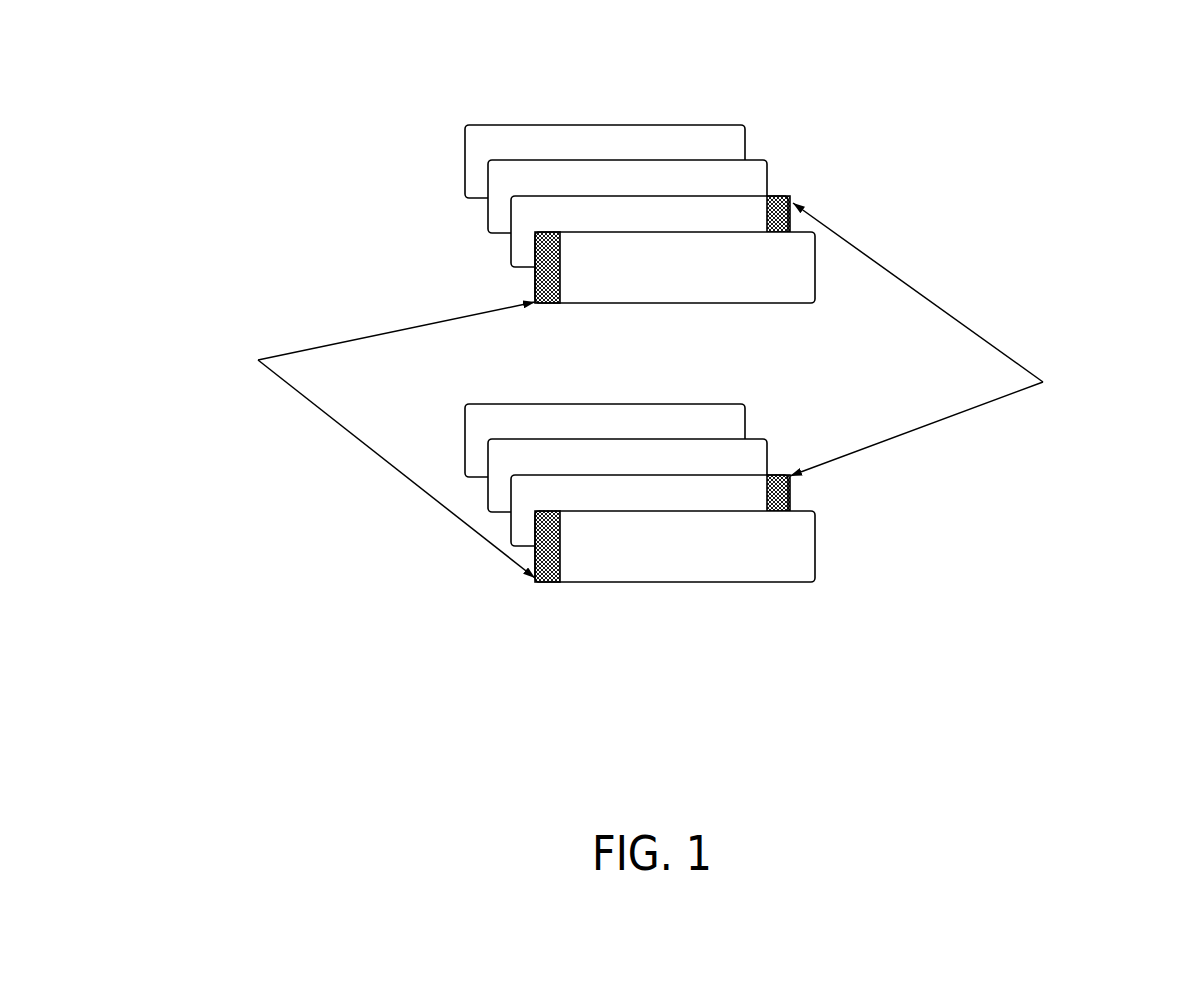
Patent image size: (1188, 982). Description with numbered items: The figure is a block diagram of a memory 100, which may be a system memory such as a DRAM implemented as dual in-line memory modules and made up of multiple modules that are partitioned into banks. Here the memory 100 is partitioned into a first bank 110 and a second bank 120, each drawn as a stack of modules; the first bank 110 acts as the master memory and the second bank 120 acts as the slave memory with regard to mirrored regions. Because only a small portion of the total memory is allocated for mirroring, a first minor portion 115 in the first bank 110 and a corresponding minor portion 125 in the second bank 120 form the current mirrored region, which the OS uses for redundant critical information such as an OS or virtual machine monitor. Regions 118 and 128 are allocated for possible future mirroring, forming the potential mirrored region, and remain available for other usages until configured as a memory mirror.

The memory 100 is at (362, 33).
The first bank 110 is at (697, 517).
The first minor portion 115 is at (548, 579).
The region 118 is at (777, 473).
The second bank 120 is at (691, 238).
The minor portion 125 is at (549, 303).
The region 128 is at (778, 195).